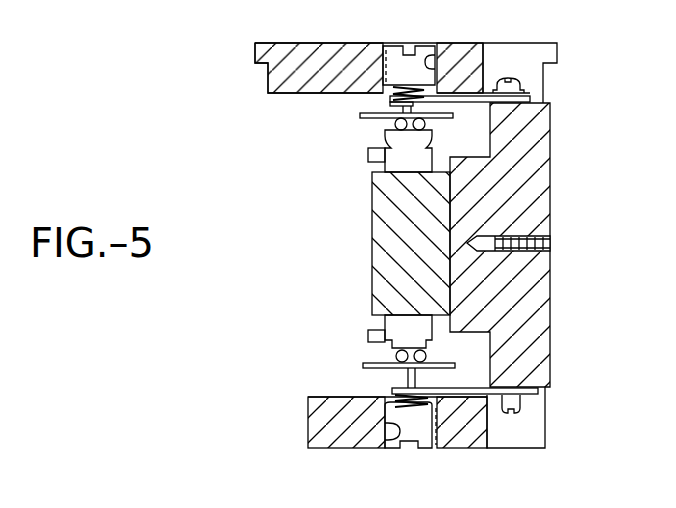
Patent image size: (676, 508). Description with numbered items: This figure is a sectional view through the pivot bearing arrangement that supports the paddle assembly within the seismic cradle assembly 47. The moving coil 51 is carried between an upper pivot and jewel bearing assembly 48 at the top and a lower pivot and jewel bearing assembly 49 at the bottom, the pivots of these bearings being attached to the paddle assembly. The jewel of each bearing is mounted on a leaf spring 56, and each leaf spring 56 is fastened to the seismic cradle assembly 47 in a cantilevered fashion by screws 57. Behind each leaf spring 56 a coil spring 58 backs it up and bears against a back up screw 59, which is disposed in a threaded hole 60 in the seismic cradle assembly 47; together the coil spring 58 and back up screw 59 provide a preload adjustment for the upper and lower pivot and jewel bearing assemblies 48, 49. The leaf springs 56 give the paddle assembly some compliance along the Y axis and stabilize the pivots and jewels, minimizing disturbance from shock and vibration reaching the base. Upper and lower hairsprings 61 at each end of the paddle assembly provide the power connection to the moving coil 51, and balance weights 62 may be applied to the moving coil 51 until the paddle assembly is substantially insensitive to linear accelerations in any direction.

The seismic cradle assembly 47 is at (302, 43).
The upper pivot and jewel bearing assembly 48 is at (396, 107).
The lower pivot and jewel bearing assembly 49 is at (392, 389).
The moving coil 51 is at (440, 153).
The leaf spring 56 is at (463, 105).
The screw 57 is at (509, 80).
The coil spring 58 is at (410, 88).
The back up screw 59 is at (396, 52).
The threaded hole 60 is at (432, 63).
The hairspring 61 is at (362, 118).
The balance weight 62 is at (368, 155).